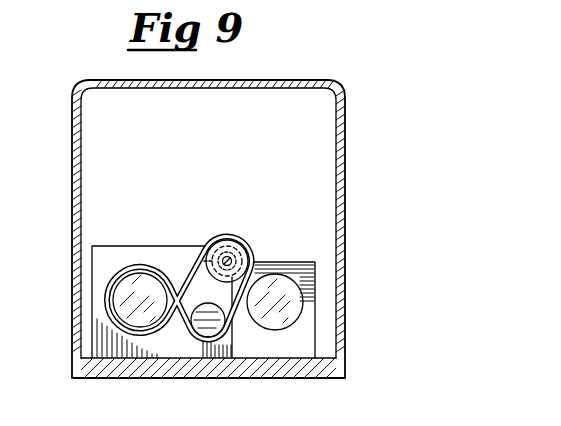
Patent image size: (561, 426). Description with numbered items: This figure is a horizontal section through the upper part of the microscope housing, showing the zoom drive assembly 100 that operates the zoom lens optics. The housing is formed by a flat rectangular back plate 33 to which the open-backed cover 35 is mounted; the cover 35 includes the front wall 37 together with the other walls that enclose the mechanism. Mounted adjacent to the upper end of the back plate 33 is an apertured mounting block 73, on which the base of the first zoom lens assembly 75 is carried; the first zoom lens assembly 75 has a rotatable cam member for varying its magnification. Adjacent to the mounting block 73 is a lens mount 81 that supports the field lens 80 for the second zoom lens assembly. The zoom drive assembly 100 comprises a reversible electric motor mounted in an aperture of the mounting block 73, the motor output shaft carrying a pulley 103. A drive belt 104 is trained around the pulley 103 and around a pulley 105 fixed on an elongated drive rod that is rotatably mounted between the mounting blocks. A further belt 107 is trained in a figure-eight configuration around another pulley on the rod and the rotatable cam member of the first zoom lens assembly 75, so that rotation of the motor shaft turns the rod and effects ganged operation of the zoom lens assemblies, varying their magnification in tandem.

The back plate 33 is at (142, 378).
The cover 35 is at (70, 189).
The front wall 37 is at (246, 79).
The mounting block 73 is at (103, 338).
The first zoom lens assembly 75 is at (102, 287).
The field lens 80 is at (298, 297).
The lens mount 81 is at (303, 343).
The zoom drive assembly 100 is at (153, 293).
The pulley 103 is at (203, 345).
The drive belt 104 is at (244, 272).
The pulley 105 is at (227, 237).
The belt 107 is at (173, 262).